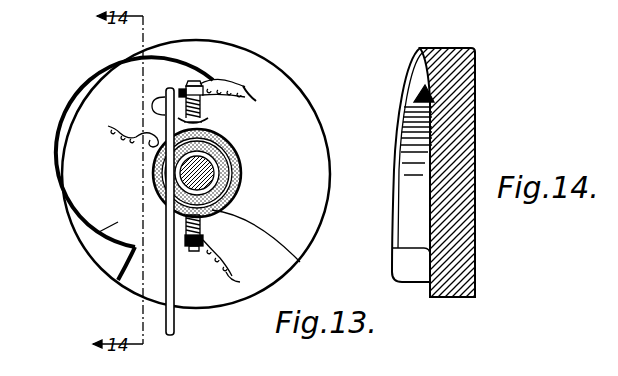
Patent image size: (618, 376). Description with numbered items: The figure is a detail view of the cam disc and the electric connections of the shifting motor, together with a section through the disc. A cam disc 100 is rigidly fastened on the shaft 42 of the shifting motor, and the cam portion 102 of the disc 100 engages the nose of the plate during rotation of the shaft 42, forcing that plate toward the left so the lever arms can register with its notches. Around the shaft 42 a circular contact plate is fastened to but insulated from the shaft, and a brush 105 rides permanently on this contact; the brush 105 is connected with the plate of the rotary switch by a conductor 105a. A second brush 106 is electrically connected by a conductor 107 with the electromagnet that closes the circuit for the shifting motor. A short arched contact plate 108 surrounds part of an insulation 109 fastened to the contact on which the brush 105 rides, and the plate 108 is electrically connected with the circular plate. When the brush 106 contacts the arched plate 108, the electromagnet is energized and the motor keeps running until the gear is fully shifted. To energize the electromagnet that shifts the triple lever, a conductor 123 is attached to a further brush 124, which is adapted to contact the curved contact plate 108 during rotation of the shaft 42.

In FIG. 13, the shaft 42 is at (233, 148).
In FIG. 13, the cam disc 100 is at (308, 105).
In FIG. 14, the cam disc 100 is at (477, 128).
In FIG. 13, the cam portion 102 is at (121, 219).
In FIG. 14, the cam portion 102 is at (403, 108).
In FIG. 13, the brush 105 is at (300, 262).
In FIG. 13, the conductor 105a is at (221, 255).
In FIG. 13, the second brush 106 is at (204, 118).
In FIG. 13, the conductor 107 is at (246, 78).
In FIG. 13, the arched contact plate 108 is at (150, 158).
In FIG. 13, the insulation 109 is at (233, 182).
In FIG. 13, the conductor 123 is at (110, 122).
In FIG. 13, the brush 124 is at (158, 112).